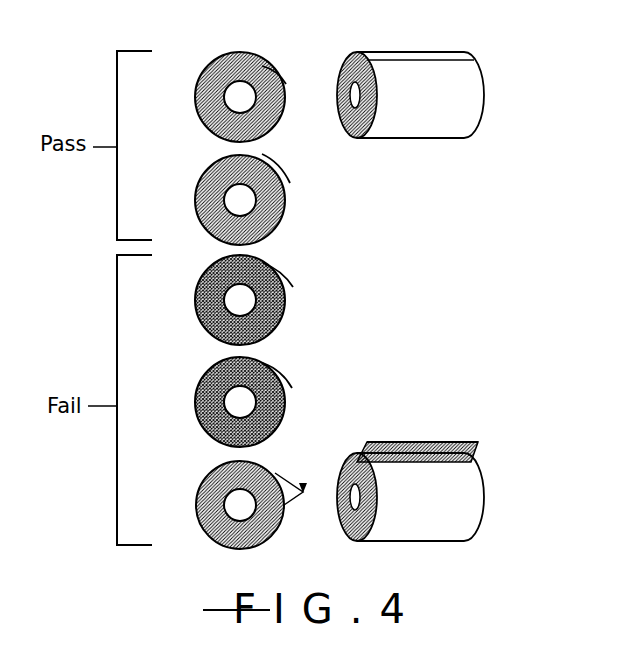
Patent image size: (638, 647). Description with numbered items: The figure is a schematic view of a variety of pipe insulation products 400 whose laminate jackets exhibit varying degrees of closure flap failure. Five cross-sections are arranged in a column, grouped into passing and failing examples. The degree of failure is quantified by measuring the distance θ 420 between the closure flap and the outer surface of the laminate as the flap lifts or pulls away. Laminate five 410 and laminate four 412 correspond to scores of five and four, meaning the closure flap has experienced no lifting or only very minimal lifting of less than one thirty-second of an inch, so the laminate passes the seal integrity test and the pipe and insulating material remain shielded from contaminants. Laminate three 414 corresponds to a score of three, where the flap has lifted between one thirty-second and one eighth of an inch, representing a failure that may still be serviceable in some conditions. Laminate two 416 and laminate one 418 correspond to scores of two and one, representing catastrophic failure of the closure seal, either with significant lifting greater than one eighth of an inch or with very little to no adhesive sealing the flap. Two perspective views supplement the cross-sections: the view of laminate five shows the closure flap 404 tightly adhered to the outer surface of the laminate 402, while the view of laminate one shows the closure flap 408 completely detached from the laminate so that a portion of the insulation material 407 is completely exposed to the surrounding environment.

The pipe insulation products 400 is at (512, 60).
The laminate 402 is at (437, 294).
The closure flap 404 is at (440, 57).
The insulation material 407 is at (473, 458).
The closure flap 408 is at (465, 441).
The laminate 5 410 is at (272, 118).
The laminate 4 412 is at (272, 221).
The laminate 3 414 is at (272, 322).
The laminate 2 416 is at (272, 424).
The laminate 1 418 is at (275, 527).
The distance θ 420 is at (318, 516).